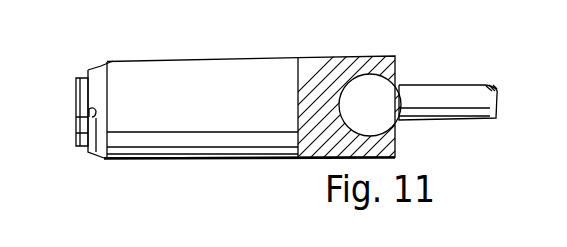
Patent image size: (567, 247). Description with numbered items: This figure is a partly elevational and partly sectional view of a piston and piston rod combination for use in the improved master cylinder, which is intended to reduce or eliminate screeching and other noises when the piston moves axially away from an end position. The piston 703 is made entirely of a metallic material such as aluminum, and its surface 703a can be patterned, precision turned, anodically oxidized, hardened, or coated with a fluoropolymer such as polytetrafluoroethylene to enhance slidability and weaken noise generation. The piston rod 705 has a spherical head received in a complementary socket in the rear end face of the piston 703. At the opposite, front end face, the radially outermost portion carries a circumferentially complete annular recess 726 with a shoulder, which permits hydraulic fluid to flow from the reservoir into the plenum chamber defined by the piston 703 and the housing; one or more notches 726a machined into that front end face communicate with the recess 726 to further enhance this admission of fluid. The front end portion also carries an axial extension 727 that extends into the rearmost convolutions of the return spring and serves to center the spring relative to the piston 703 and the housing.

The piston 703 is at (215, 114).
The surface of the piston 703a is at (177, 161).
The piston rod 705 is at (448, 93).
The annular recess 726 is at (102, 81).
The notches 726a is at (93, 118).
The axial extension 727 is at (76, 89).